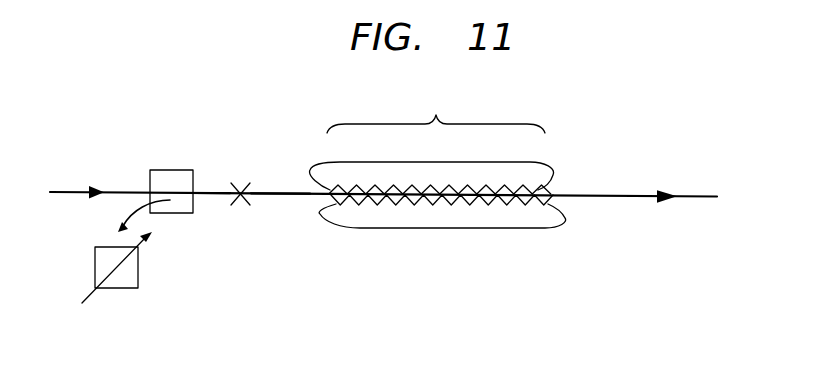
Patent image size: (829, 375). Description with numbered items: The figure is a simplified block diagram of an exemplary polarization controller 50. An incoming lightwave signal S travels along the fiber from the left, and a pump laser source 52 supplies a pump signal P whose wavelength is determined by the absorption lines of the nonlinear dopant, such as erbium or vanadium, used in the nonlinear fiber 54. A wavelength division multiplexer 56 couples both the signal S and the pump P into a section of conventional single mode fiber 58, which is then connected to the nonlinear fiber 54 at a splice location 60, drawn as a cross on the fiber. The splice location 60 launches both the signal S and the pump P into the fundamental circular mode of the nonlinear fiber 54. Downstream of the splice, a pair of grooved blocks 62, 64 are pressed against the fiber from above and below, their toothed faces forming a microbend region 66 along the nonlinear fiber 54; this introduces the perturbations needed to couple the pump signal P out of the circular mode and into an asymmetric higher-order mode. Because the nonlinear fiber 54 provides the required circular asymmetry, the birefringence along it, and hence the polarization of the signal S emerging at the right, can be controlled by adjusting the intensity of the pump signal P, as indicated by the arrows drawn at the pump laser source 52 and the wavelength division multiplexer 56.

The polarization controller 50 is at (605, 137).
The pump laser source 52 is at (117, 289).
The nonlinear fiber 54 is at (288, 190).
The wavelength division multiplexer 56 is at (173, 214).
The conventional single mode fiber 58 is at (217, 190).
The splice location 60 is at (241, 205).
The grooved block 62 is at (437, 165).
The grooved block 64 is at (437, 229).
The microbend region 66 is at (436, 109).